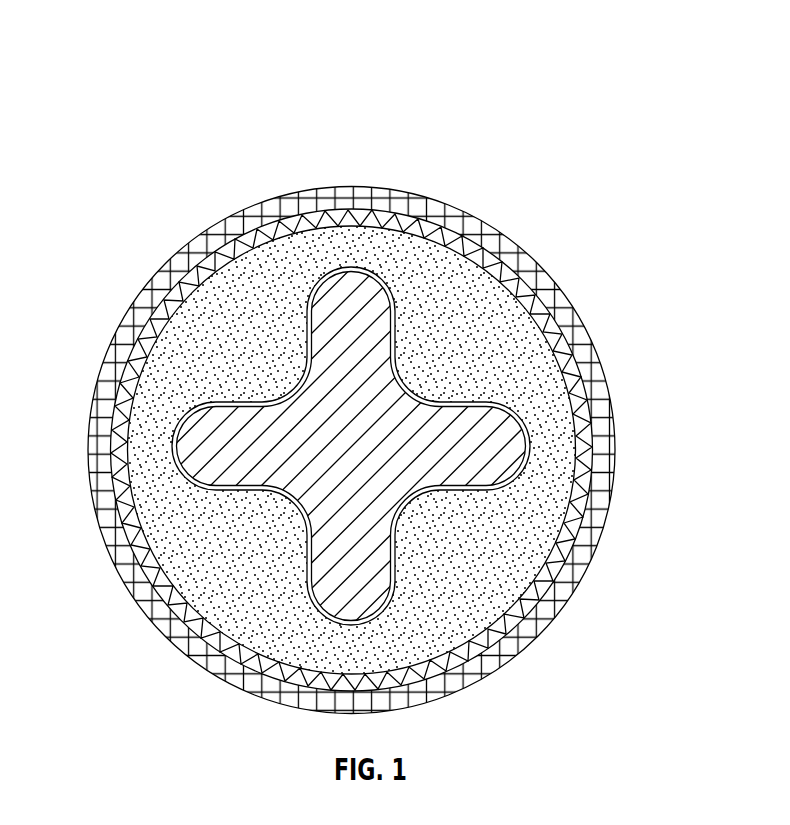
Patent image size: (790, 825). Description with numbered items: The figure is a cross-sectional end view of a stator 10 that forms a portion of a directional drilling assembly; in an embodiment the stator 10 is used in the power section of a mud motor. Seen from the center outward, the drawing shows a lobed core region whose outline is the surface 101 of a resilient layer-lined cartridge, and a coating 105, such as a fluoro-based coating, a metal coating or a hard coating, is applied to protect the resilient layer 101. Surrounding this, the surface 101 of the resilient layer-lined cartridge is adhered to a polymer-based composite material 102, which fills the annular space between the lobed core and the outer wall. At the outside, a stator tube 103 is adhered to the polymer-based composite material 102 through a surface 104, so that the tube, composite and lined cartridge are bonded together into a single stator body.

The stator 10 is at (138, 155).
The surface of resilient layer-lined cartridge 101 is at (535, 462).
The polymer-based composite material 102 is at (484, 590).
The stator tube 103 is at (537, 636).
The surface 104 is at (172, 592).
The coating 105 is at (372, 463).